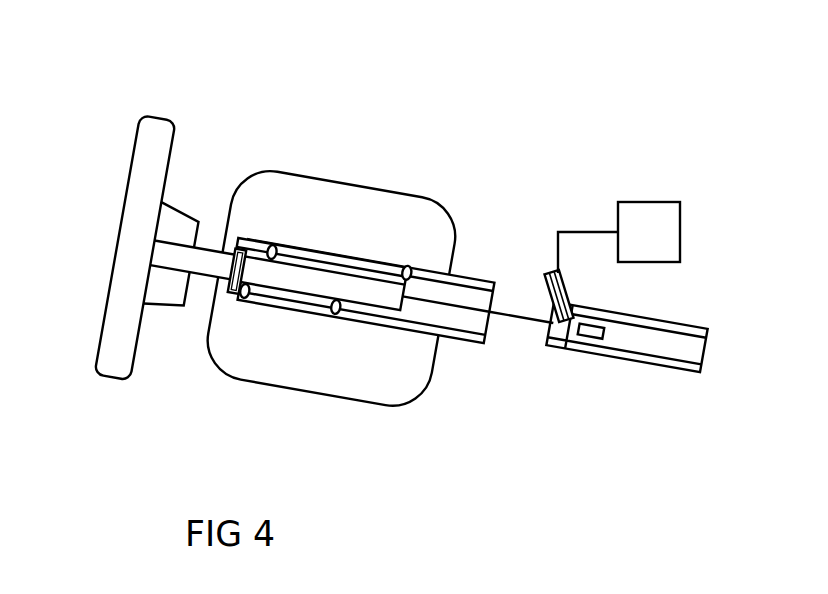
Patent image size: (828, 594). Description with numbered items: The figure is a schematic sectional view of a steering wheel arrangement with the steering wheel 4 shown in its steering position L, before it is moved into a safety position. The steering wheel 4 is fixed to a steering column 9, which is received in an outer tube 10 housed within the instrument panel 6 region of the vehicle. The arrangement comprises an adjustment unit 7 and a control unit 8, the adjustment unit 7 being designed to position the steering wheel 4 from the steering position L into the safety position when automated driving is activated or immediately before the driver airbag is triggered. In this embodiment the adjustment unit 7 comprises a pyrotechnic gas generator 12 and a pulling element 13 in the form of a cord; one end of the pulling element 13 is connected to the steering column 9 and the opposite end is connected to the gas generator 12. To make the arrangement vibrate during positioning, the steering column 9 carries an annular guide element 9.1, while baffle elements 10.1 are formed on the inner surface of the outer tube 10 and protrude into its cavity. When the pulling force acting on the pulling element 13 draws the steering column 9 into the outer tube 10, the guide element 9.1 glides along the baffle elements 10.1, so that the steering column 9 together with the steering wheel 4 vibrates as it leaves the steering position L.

The steering position L is at (229, 131).
The steering wheel 4 is at (118, 300).
The instrument panel 6 is at (336, 204).
The adjustment unit 7 is at (548, 215).
The control unit 8 is at (658, 248).
The steering column 9 is at (361, 285).
The guide element 9.1 is at (233, 298).
The outer tube 10 is at (460, 344).
The baffle elements 10.1 is at (273, 246).
The pyrotechnic gas generator 12 is at (654, 360).
The pulling element 13 is at (532, 318).